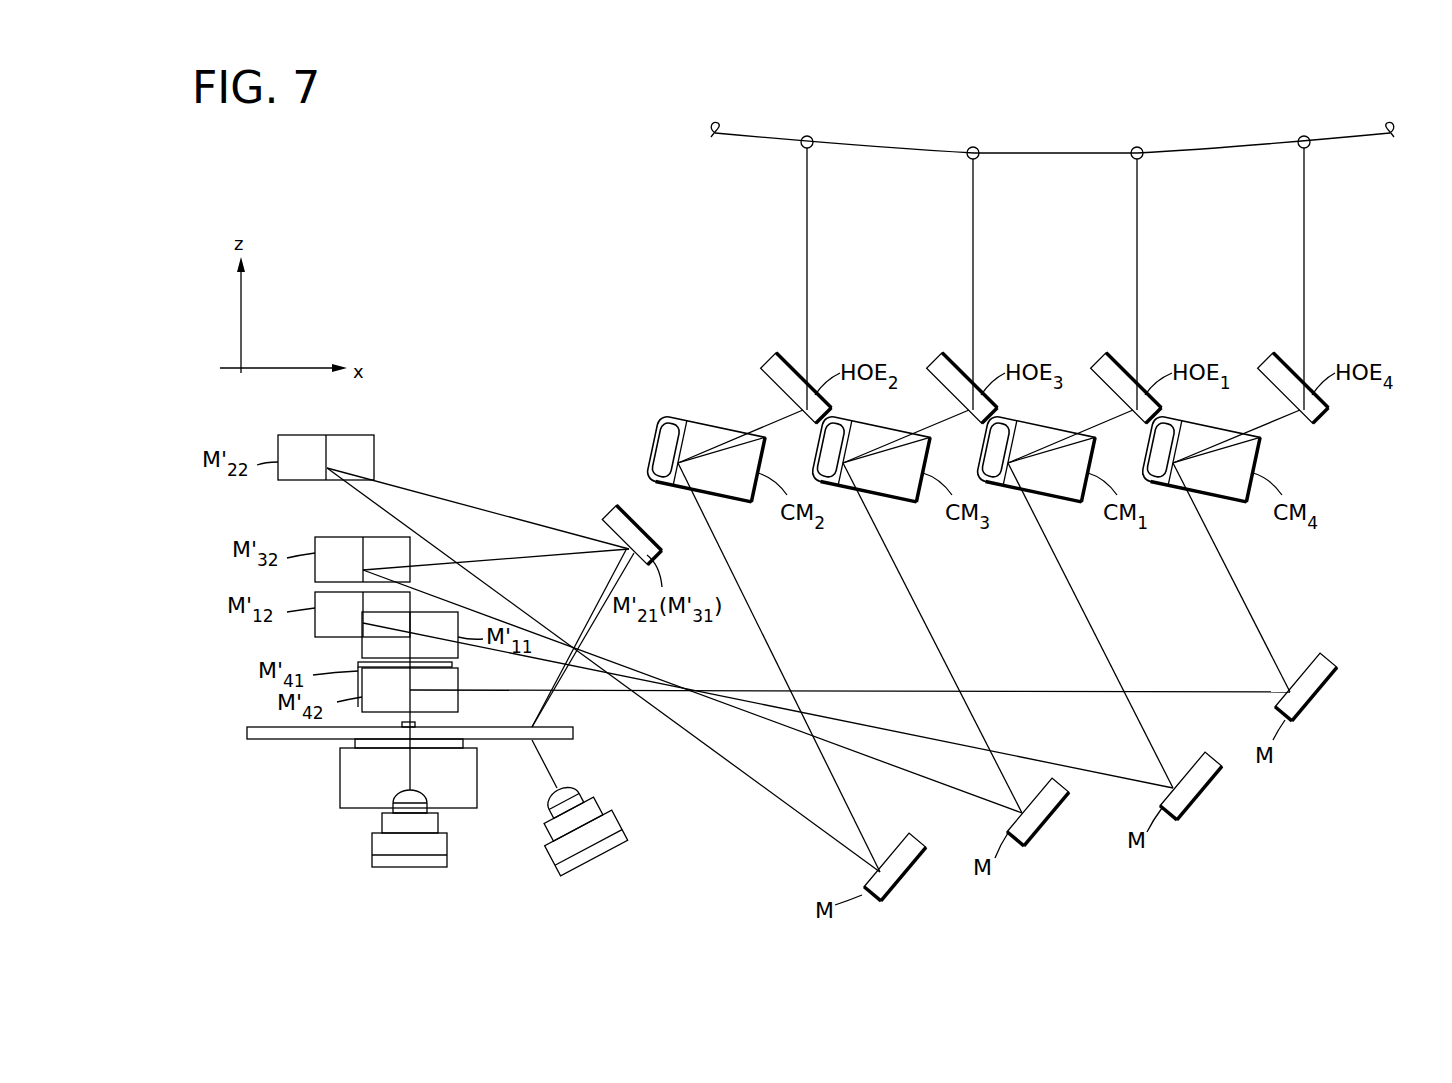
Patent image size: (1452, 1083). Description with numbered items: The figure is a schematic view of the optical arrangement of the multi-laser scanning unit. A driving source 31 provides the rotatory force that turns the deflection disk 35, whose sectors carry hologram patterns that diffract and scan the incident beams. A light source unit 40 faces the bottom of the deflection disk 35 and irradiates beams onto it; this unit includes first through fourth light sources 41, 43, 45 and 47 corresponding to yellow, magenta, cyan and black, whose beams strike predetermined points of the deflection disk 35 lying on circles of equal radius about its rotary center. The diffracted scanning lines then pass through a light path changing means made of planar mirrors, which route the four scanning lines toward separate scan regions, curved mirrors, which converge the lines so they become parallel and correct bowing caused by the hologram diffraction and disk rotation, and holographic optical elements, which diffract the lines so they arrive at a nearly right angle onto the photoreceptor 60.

The photoreceptor 60 is at (740, 134).
The deflection disk 35 is at (247, 732).
The driving source 31 is at (340, 775).
The light source unit 40 is at (386, 824).
The first light source 41 is at (451, 871).
The fourth light source 47 is at (448, 860).
The second light source 43 is at (631, 824).
The third light source 45 is at (620, 830).